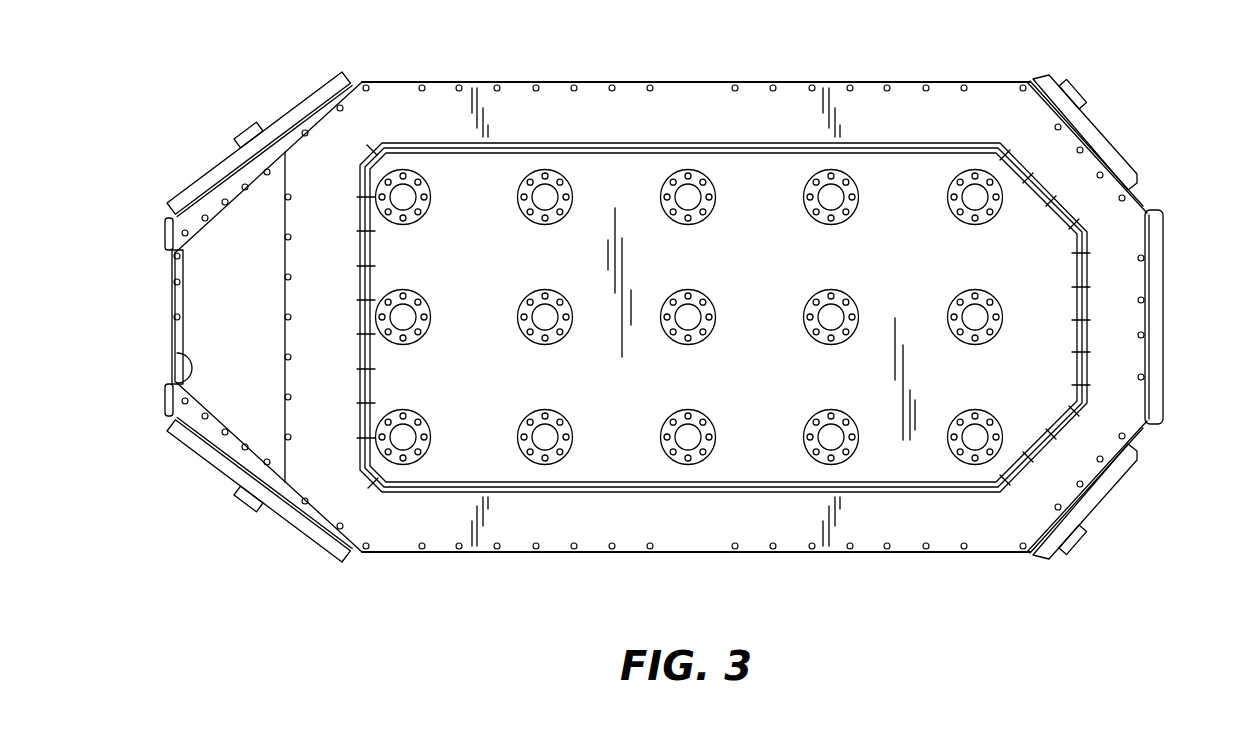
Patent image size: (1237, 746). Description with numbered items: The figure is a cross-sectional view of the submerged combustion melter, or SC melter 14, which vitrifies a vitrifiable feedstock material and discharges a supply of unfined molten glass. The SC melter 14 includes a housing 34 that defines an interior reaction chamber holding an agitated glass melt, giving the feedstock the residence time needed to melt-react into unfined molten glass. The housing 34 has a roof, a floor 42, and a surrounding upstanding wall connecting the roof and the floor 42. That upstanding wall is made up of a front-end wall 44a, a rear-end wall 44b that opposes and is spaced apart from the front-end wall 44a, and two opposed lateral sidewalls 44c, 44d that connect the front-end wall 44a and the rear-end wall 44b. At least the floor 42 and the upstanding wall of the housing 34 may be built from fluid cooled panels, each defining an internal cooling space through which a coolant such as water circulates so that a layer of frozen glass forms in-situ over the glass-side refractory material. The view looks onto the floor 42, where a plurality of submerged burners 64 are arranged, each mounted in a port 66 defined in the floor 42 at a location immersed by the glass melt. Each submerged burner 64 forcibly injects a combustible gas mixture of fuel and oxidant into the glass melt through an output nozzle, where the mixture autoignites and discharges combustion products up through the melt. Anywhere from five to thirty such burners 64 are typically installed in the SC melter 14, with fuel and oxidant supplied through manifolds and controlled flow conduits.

The SC melter 14 is at (206, 73).
The housing 34 is at (415, 82).
The floor 42 is at (778, 390).
The front-end wall 44a is at (173, 292).
The rear-end wall 44b is at (1128, 325).
The lateral sidewall 44c is at (697, 108).
The lateral sidewall 44d is at (708, 543).
The submerged burner 64 is at (688, 305).
The port 66 is at (545, 335).